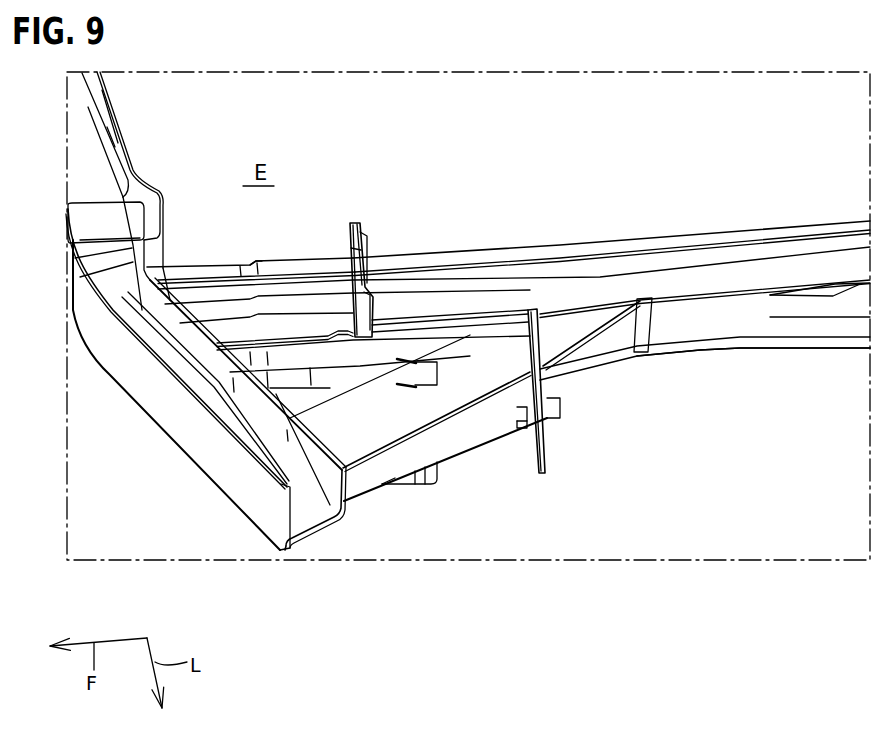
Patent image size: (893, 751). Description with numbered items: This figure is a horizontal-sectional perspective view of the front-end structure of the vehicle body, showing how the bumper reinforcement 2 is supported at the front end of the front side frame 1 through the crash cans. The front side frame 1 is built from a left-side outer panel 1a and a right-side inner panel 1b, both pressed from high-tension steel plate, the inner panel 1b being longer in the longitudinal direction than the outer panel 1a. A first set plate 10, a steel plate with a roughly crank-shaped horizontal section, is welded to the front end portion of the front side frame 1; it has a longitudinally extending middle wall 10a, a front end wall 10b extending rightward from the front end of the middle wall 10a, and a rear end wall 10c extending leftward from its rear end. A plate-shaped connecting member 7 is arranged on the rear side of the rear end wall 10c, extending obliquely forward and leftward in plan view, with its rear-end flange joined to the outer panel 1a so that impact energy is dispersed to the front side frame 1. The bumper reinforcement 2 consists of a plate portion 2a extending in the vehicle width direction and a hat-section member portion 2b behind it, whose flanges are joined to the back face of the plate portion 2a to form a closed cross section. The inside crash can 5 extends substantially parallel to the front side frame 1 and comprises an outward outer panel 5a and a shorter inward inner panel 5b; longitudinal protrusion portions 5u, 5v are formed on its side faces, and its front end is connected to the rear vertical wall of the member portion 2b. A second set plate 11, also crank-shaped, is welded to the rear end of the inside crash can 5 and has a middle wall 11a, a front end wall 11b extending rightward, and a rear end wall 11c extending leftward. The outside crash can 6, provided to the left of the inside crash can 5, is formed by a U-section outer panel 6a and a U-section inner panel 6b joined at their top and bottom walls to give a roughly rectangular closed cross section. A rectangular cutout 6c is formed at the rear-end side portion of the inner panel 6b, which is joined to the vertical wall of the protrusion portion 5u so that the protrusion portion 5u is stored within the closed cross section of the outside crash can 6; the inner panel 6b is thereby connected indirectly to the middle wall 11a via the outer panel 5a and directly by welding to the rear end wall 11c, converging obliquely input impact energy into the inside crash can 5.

The front side frame 1 is at (727, 366).
The outer panel 1a is at (797, 352).
The inner panel 1b is at (797, 227).
The bumper reinforcement 2 is at (74, 139).
The plate portion 2a is at (120, 362).
The member portion 2b is at (309, 514).
The inside crash can 5 is at (188, 262).
The outer panel 5a is at (276, 396).
The inner panel 5b is at (221, 264).
The protrusion portion 5u is at (240, 362).
The protrusion portion 5v is at (275, 268).
The outside crash can 6 is at (377, 487).
The outer panel 6a is at (477, 433).
The inner panel 6b is at (318, 405).
The cutout 6c is at (437, 365).
The connecting member 7 is at (598, 353).
The first set plate 10 is at (467, 304).
The middle wall 10a is at (508, 310).
The front end wall 10b is at (361, 242).
The rear end wall 10c is at (561, 405).
The second set plate 11 is at (349, 233).
The middle wall 11a is at (375, 302).
The front end wall 11b is at (352, 249).
The rear end wall 11c is at (520, 428).